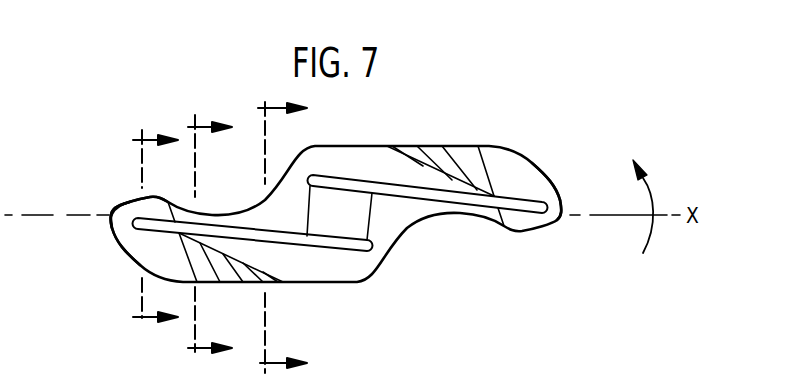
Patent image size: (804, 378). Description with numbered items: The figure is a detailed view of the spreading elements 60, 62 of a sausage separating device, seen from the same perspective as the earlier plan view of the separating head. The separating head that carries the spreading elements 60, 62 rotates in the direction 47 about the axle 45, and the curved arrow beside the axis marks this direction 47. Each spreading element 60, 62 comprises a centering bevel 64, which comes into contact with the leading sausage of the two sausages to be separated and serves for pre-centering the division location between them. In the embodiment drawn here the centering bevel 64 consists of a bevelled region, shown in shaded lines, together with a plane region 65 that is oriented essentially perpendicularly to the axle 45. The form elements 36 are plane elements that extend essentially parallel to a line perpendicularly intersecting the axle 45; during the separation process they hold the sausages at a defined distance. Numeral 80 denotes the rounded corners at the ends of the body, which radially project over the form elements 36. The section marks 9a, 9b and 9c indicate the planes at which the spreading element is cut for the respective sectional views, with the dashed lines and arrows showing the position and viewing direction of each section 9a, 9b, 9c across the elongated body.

The form elements 36 is at (297, 243).
The axle 45 is at (363, 217).
The direction of rotation 47 is at (650, 195).
The spreading element 60 is at (494, 265).
The spreading element 62 is at (119, 188).
The centering bevel 64 is at (182, 247).
The plane region 65 is at (117, 233).
The rounded corners 80 is at (110, 215).
The section line 9a is at (260, 224).
The section line 9b is at (190, 232).
The section line 9c is at (136, 222).